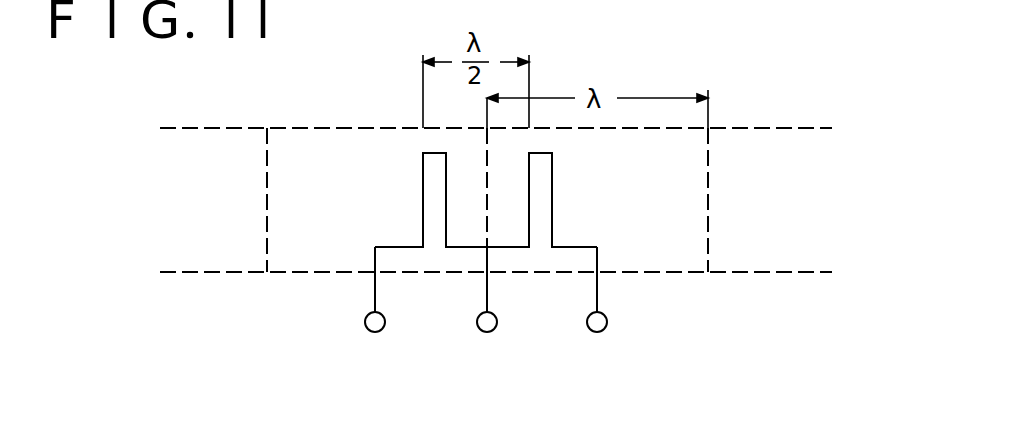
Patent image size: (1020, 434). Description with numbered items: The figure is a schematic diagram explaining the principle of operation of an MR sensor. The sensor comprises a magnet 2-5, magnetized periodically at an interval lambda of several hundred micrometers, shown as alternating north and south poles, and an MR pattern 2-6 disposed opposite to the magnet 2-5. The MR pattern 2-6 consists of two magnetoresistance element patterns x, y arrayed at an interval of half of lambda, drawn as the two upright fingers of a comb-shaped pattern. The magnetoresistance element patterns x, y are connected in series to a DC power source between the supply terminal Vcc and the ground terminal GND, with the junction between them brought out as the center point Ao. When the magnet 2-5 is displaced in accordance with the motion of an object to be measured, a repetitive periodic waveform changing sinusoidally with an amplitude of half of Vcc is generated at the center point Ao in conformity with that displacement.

The magnet 2-5 is at (724, 153).
The MR pattern 2-6 is at (515, 253).
The magnetoresistance element pattern x is at (418, 155).
The magnetoresistance element pattern y is at (551, 155).
The ground terminal of DC power source GND is at (379, 306).
The center point Ao is at (489, 306).
The DC power source terminal Vcc is at (627, 302).